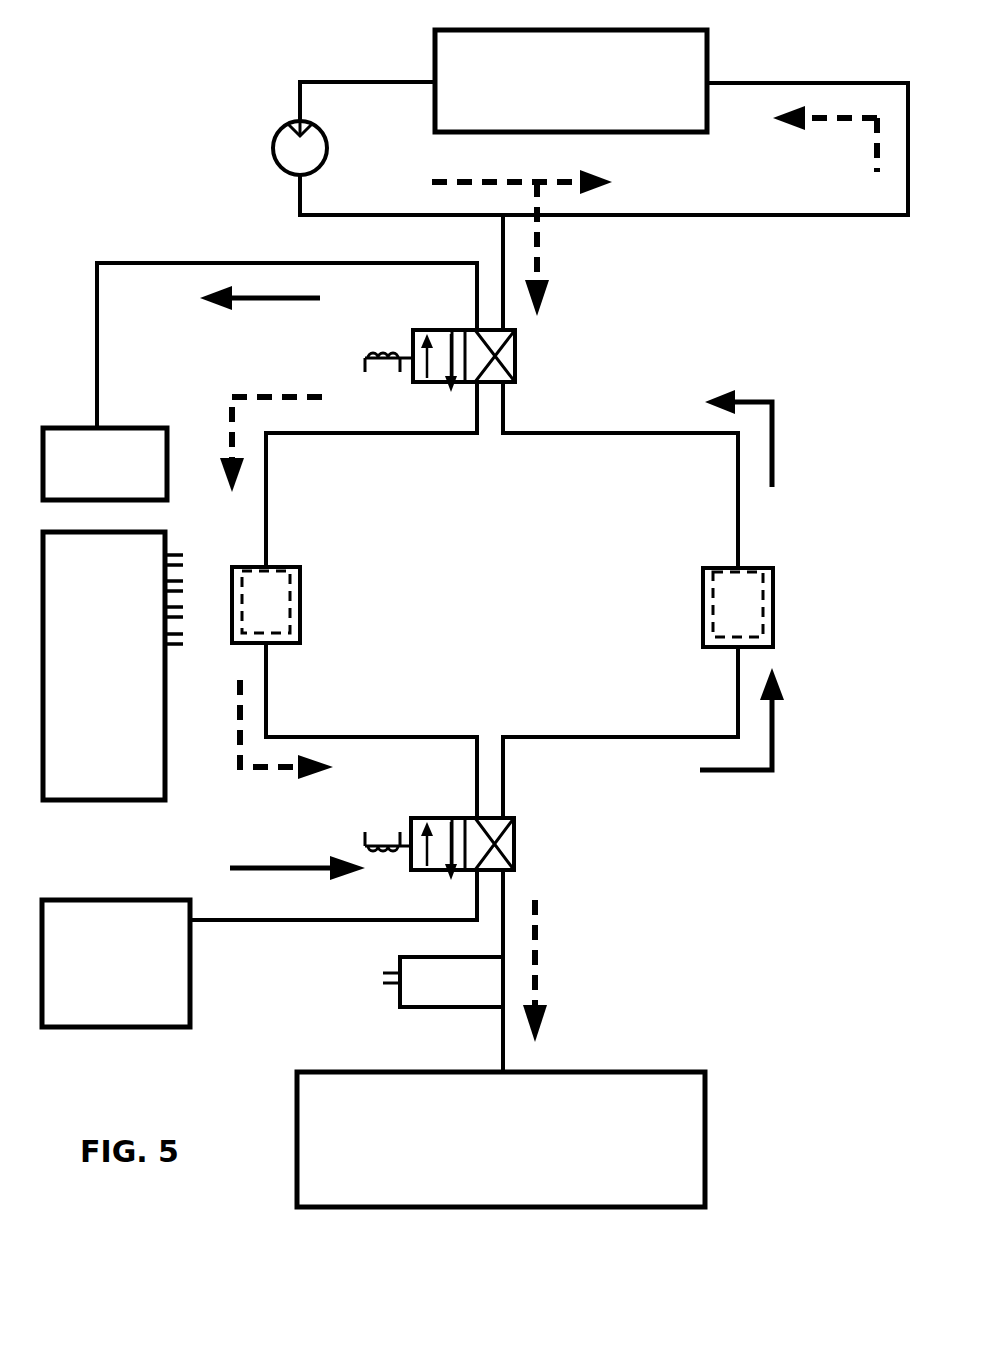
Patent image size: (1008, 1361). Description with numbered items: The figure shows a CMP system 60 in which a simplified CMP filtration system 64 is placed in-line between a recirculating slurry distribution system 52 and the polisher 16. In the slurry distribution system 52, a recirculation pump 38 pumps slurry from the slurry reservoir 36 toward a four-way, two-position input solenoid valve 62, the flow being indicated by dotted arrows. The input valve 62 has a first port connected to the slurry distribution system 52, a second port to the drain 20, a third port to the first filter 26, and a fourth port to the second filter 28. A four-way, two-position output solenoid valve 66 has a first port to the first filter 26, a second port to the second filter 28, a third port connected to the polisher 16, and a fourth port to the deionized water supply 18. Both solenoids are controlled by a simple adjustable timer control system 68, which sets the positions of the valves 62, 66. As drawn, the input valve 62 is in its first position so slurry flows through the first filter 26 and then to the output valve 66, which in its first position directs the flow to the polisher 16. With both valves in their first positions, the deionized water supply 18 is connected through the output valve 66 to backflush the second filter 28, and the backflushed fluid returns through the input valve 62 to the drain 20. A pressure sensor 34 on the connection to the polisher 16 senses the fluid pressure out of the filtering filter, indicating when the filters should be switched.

The polisher 16 is at (489, 1172).
The deionized water supply 18 is at (103, 1016).
The drain 20 is at (92, 494).
The first filter 26 is at (300, 598).
The second filter 28 is at (703, 600).
The pressure sensor 34 is at (400, 957).
The slurry reservoir 36 is at (558, 119).
The recirculation pump 38 is at (327, 132).
The recirculating slurry distribution system 52 is at (212, 118).
The CMP system 60 is at (165, 68).
The input solenoid valve 62 is at (428, 330).
The CMP filtration system 64 is at (168, 176).
The output solenoid valve 66 is at (428, 818).
The adjustable timer control system 68 is at (91, 705).